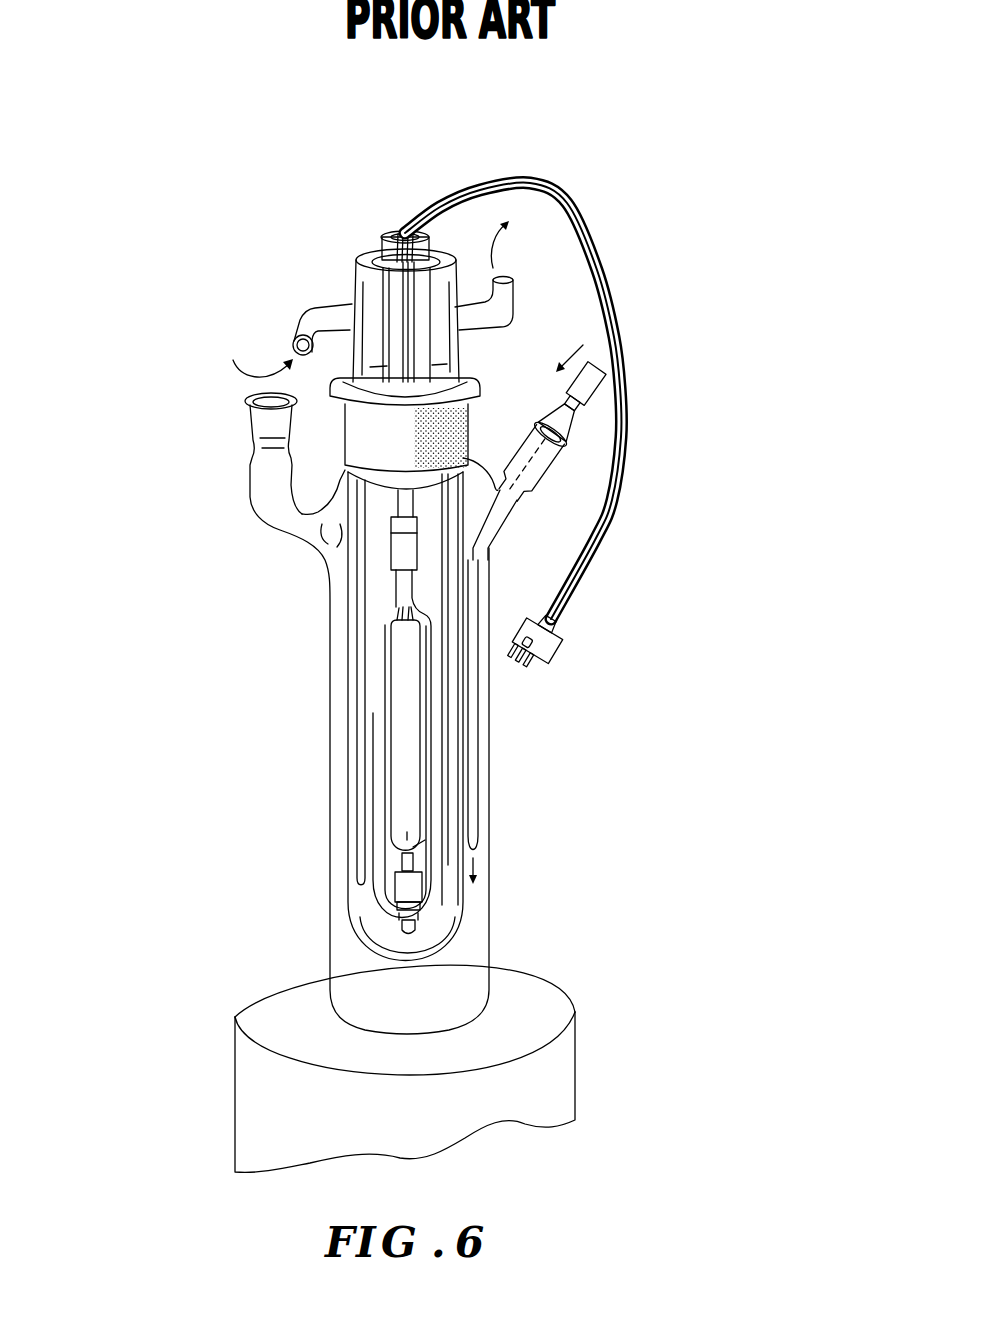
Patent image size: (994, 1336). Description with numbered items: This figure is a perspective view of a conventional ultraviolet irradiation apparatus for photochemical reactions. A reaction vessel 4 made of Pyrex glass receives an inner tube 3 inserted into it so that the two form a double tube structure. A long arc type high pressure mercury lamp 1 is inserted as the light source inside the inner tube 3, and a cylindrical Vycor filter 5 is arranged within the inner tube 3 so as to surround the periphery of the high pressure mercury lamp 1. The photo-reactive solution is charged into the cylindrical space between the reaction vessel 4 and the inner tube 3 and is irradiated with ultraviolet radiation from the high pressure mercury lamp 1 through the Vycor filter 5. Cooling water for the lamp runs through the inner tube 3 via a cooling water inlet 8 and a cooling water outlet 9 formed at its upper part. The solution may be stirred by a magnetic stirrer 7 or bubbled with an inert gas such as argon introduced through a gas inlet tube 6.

The high pressure mercury lamp 1 is at (387, 698).
The inner tube 3 is at (350, 633).
The reaction vessel 4 is at (330, 797).
The Vycor filter 5 is at (435, 892).
The gas inlet tube 6 is at (603, 388).
The magnetic stirrer 7 is at (577, 1072).
The cooling water inlet 8 is at (296, 330).
The cooling water outlet 9 is at (508, 296).